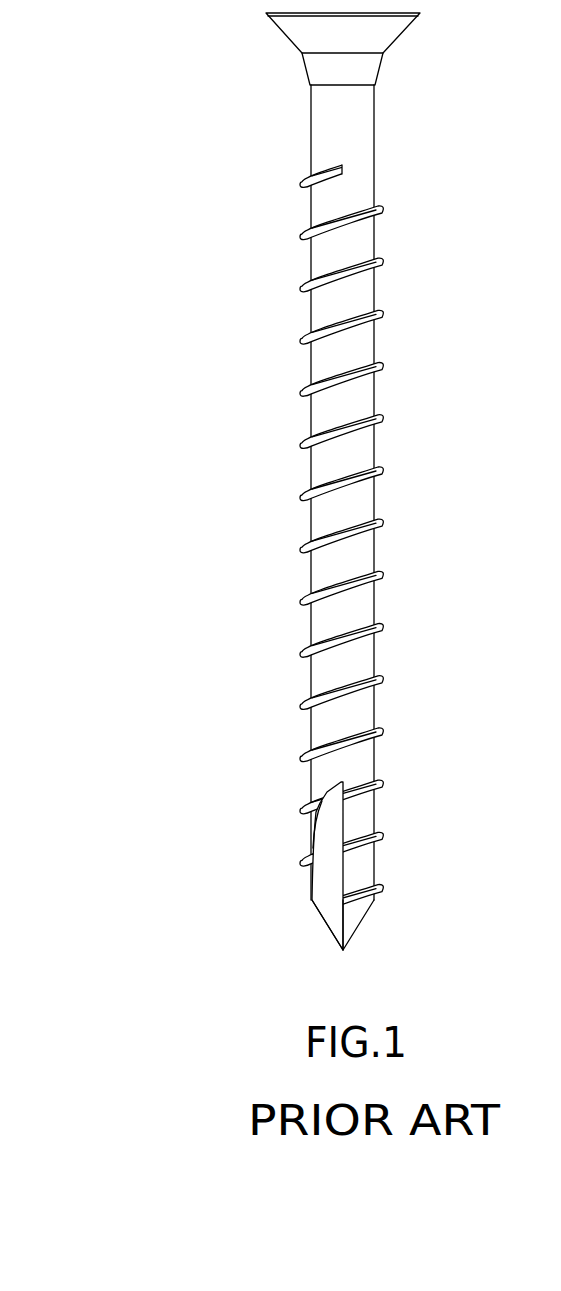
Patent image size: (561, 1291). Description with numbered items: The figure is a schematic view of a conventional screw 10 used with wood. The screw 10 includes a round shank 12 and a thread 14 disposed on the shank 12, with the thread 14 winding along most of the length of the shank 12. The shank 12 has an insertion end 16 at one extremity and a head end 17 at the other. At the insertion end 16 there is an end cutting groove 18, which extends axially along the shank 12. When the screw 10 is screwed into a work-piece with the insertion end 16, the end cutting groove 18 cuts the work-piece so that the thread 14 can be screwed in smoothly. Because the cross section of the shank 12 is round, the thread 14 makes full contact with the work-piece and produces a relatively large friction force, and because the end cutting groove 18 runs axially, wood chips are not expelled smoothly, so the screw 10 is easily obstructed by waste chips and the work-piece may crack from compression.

The screw 10 is at (277, 481).
The shank 12 is at (365, 443).
The thread 14 is at (380, 517).
The insertion end 16 is at (352, 917).
The head end 17 is at (378, 31).
The end cutting groove 18 is at (325, 847).